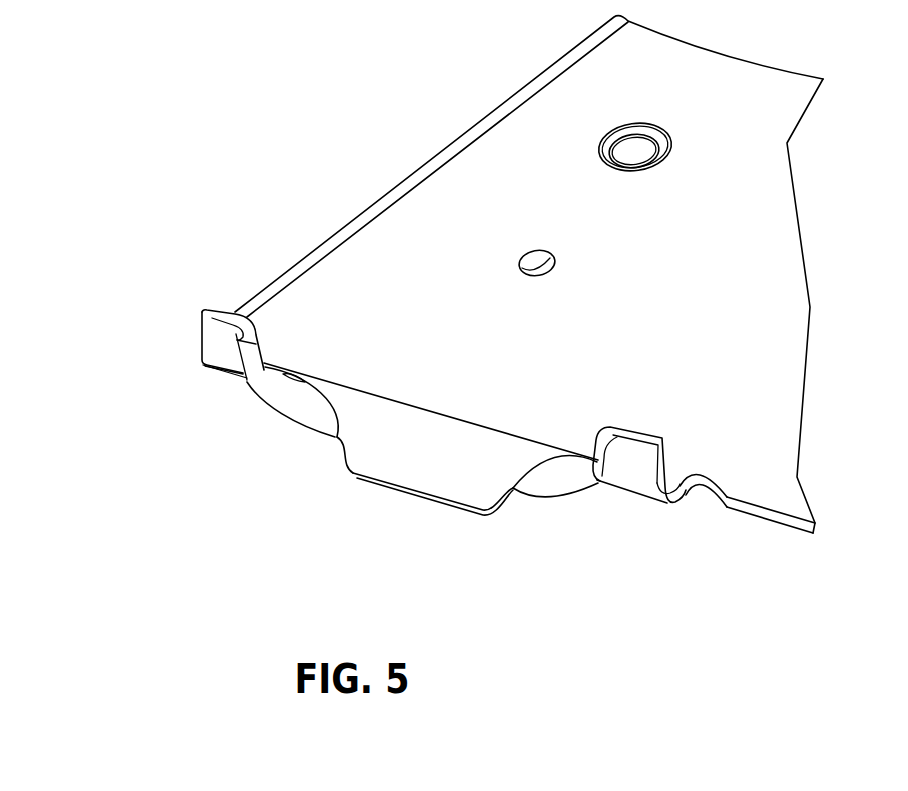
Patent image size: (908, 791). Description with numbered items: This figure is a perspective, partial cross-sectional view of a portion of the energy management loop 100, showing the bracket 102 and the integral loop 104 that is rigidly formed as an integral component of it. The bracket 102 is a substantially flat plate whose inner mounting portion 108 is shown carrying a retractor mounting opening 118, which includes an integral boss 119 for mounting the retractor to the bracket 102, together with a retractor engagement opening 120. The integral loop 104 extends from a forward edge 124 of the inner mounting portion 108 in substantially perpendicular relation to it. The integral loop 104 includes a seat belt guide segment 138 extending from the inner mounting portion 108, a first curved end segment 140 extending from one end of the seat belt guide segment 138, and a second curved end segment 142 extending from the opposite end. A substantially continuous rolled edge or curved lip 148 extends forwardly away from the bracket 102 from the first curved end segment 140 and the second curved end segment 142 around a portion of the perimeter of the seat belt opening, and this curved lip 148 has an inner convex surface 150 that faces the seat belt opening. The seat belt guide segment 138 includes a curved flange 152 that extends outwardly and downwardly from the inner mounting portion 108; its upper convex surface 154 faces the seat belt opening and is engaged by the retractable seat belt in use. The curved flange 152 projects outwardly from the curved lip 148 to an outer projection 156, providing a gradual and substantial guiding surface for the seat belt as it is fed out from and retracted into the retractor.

The energy management loop 100 is at (261, 94).
The bracket 102 is at (715, 40).
The integral loop 104 is at (177, 342).
The inner mounting portion 108 is at (780, 217).
The retractor mounting opening 118 is at (622, 128).
The integral boss 119 is at (647, 156).
The retractor engagement opening 120 is at (545, 268).
The forward edge 124 is at (745, 505).
The seat belt guide segment 138 is at (405, 410).
The first curved end segment 140 is at (212, 328).
The second curved end segment 142 is at (642, 462).
The curved lip 148 is at (215, 368).
The inner convex surface 150 is at (247, 382).
The curved flange 152 is at (368, 465).
The upper convex surface 154 is at (443, 469).
The outer projection 156 is at (427, 497).